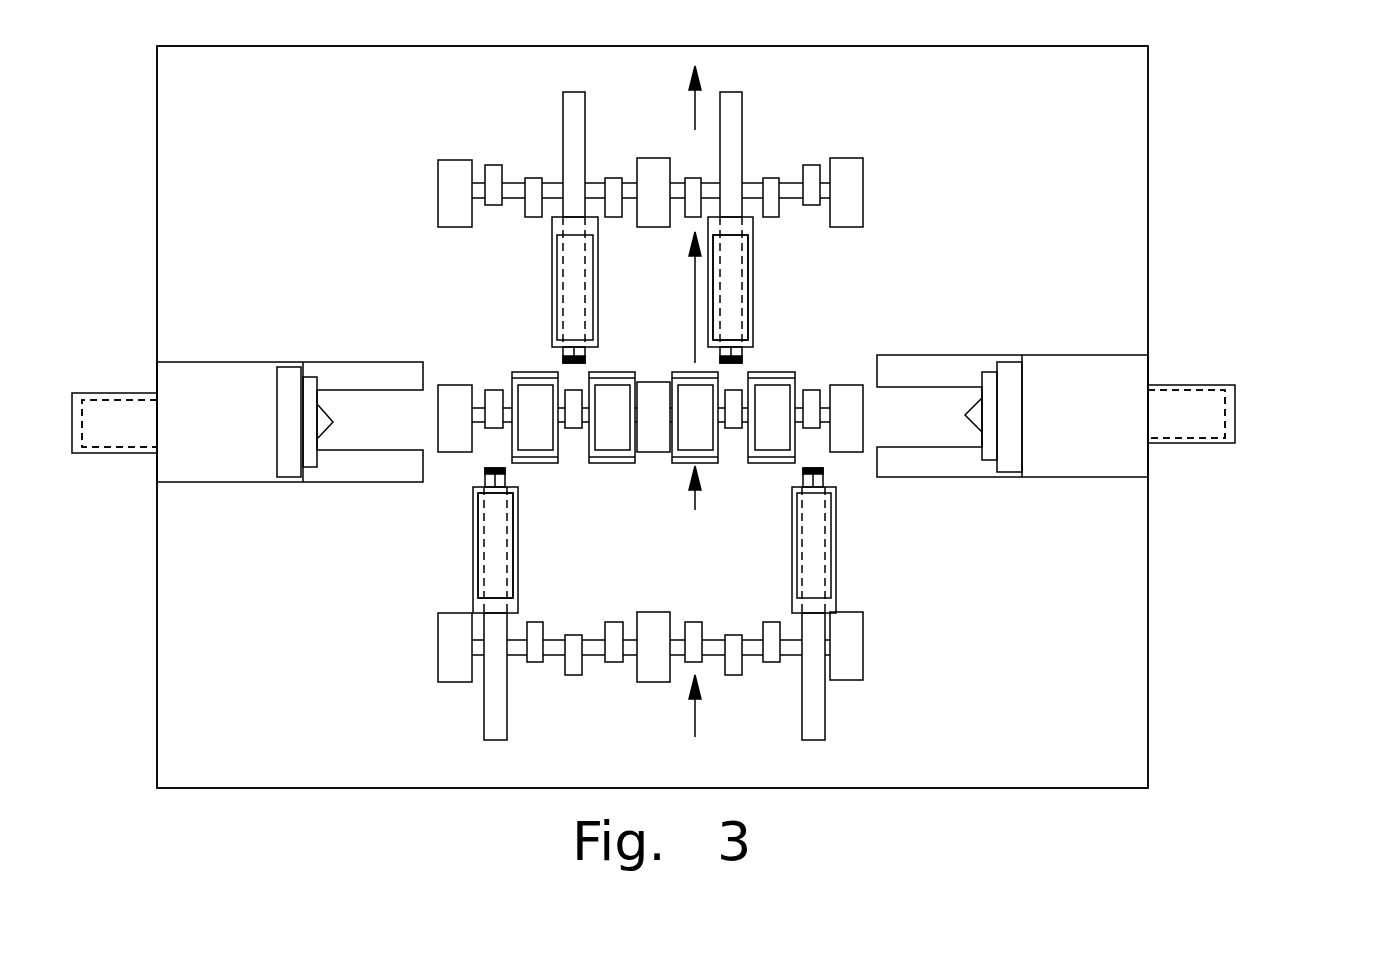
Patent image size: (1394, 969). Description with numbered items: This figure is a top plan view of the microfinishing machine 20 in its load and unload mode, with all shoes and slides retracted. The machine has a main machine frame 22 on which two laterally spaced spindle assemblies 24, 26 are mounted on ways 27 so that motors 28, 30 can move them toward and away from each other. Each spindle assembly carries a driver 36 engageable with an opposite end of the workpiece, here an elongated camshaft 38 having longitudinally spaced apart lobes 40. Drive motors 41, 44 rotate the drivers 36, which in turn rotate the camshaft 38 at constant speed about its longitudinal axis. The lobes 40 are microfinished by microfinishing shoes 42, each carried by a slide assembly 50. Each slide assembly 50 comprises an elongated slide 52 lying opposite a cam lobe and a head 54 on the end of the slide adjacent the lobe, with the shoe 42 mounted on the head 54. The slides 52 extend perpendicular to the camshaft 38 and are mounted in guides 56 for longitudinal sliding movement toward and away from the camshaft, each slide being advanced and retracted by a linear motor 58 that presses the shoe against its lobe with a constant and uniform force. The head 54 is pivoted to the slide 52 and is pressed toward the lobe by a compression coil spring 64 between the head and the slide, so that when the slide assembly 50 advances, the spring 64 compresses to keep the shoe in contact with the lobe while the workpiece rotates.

The microfinishing machine 20 is at (765, 409).
The main machine frame 22 is at (1097, 690).
The spindle assembly 24 is at (222, 397).
The spindle assembly 26 is at (1080, 395).
The ways 27 is at (352, 360).
The motor 28 is at (127, 447).
The motor 30 is at (1167, 392).
The drivers 36 is at (320, 436).
The camshaft 38 is at (855, 352).
The lobes 40 is at (492, 405).
The drive motor 41 is at (97, 393).
The microfinishing shoes 42 is at (488, 470).
The drive motor 44 is at (1213, 385).
The slide assembly 50 is at (540, 116).
The slide 52 is at (565, 148).
The head 54 is at (745, 358).
The guides 56 is at (552, 292).
The linear motor 58 is at (753, 312).
The compression coil spring 64 is at (508, 483).